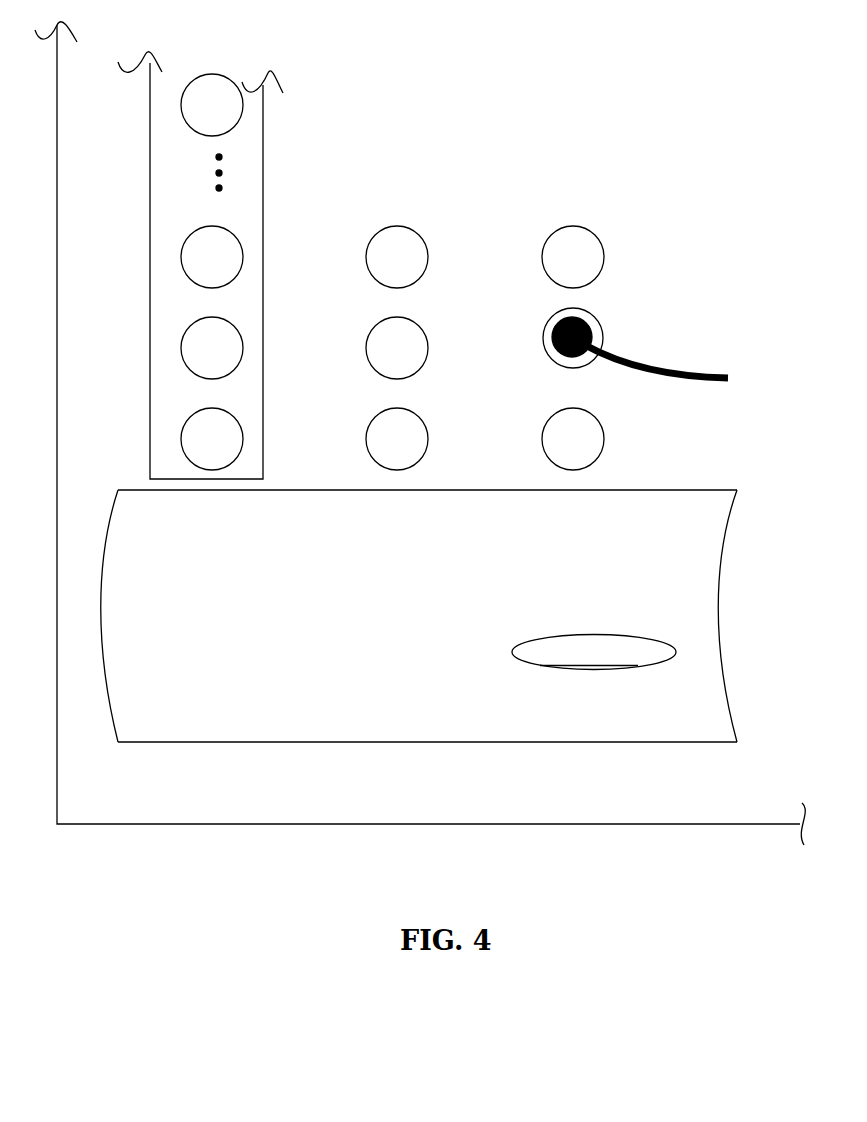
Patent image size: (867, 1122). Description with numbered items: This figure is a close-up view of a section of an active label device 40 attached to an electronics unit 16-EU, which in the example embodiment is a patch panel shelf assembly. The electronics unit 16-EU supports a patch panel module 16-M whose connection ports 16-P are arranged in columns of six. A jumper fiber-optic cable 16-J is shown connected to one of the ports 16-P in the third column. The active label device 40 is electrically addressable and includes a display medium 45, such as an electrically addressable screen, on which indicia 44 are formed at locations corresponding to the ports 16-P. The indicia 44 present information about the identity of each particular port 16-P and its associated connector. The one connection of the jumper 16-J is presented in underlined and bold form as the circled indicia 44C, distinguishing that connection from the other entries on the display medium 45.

The electronics unit 16-EU is at (225, 796).
The patch panel module 16-M is at (263, 136).
The connection ports 16-P is at (408, 222).
The jumper fiber-optic cable 16-J is at (645, 367).
The active label device 40 is at (707, 478).
The indicia 44 is at (583, 707).
The circled indicia 44C is at (648, 635).
The display medium 45 is at (715, 683).